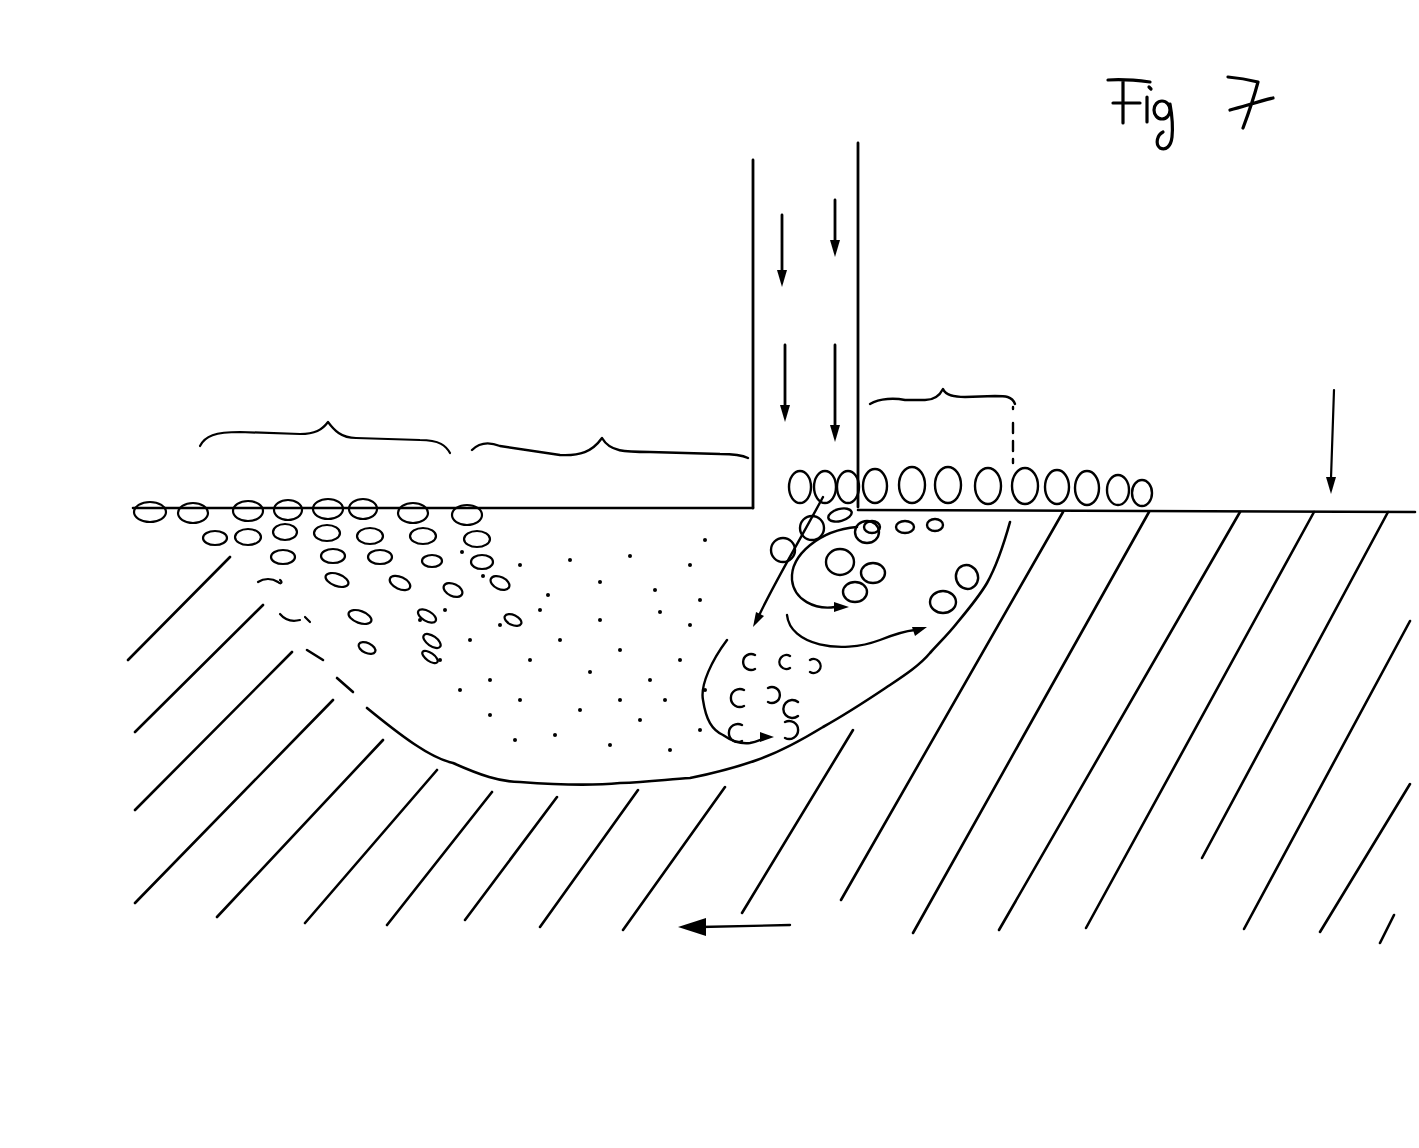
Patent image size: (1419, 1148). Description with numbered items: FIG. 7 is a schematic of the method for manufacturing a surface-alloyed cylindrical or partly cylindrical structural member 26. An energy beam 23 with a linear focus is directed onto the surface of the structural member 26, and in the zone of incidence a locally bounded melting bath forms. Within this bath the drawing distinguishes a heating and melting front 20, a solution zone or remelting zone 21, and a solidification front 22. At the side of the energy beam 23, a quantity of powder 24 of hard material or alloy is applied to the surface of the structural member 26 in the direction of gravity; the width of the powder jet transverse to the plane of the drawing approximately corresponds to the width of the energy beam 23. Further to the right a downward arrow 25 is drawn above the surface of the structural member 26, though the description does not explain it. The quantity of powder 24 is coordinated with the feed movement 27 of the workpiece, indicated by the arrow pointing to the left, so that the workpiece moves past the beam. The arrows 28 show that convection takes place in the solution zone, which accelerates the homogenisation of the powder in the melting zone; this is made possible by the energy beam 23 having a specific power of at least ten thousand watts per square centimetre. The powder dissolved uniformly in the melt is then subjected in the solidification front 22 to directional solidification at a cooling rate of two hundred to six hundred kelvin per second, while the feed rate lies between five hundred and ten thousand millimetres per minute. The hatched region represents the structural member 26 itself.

The heating and melting front 20 is at (942, 404).
The solution zone 21 is at (610, 426).
The solidification front 22 is at (328, 522).
The energy beam 23 is at (843, 303).
The quantity of powder 24 is at (1150, 469).
The gas flow 25 is at (1337, 415).
The structural member 26 is at (1124, 826).
The feed movement 27 is at (764, 925).
The arrows 28 is at (867, 660).